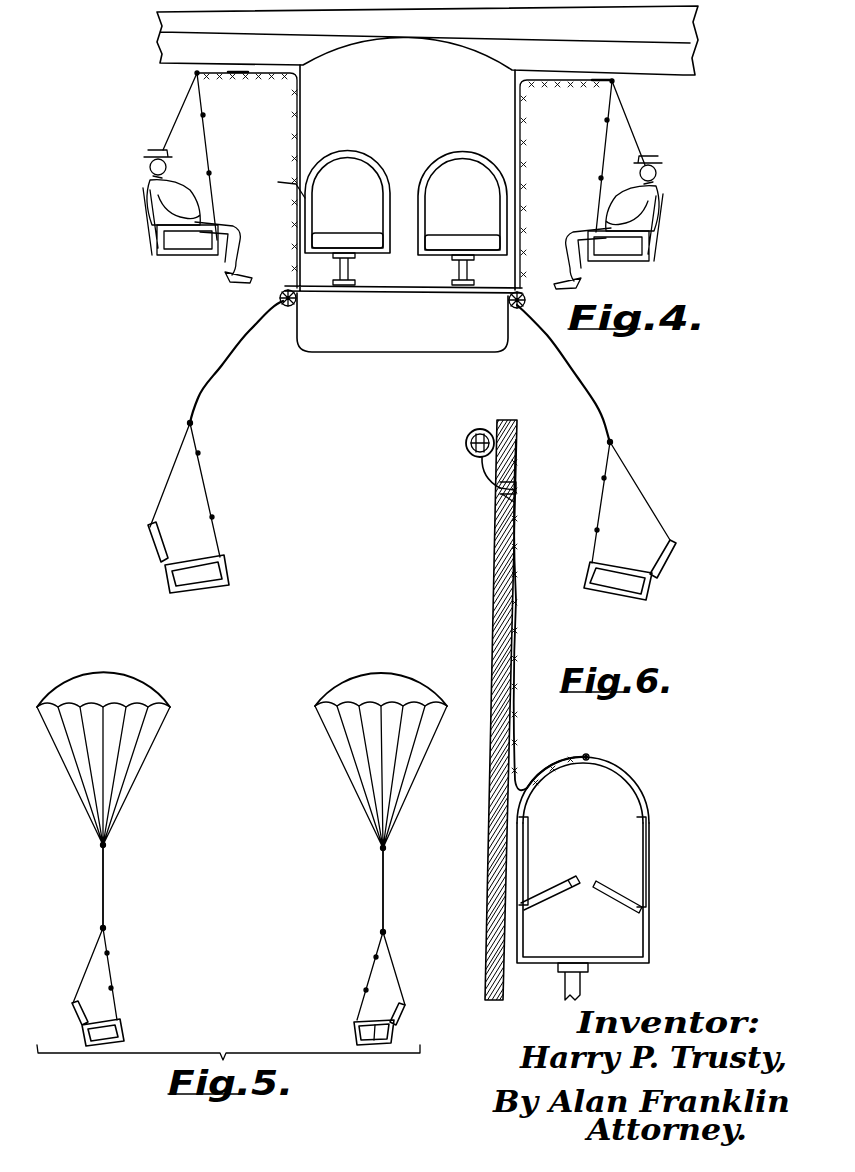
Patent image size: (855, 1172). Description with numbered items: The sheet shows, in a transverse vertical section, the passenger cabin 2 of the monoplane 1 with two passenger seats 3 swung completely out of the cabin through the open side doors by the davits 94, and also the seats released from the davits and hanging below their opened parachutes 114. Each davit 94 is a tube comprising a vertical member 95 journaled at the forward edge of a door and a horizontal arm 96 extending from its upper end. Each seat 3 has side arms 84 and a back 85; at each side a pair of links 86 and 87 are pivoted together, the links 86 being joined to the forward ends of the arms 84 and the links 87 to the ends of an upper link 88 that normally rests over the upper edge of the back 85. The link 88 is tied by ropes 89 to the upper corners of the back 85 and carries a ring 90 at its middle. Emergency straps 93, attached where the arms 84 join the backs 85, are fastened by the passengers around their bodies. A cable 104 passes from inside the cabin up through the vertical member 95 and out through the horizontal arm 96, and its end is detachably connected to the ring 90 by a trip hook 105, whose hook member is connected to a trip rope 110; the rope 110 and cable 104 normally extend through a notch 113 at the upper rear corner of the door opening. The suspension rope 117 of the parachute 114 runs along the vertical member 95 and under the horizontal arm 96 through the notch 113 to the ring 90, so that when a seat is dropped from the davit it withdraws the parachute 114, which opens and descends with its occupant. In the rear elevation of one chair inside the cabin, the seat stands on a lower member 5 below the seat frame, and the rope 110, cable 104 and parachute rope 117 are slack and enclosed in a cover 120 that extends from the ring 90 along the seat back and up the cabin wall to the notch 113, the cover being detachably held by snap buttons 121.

In FIG. 4, the passenger monoplane 1 is at (427, 178).
In FIG. 6, the passenger cabin 2 is at (493, 832).
In FIG. 4, the passenger seat 3 is at (403, 375).
In FIG. 6, the passenger seat 3 is at (573, 930).
In FIG. 5, the passenger seat 3 is at (238, 1022).
In FIG. 6, the seat support rod 5 is at (572, 985).
In FIG. 6, the side arm 84 is at (517, 927).
In FIG. 5, the side arm 84 is at (377, 1023).
In FIG. 5, the back 85 is at (403, 1015).
In FIG. 4, the link 86 is at (598, 207).
In FIG. 5, the link 86 is at (117, 1001).
In FIG. 4, the link 87 is at (605, 137).
In FIG. 6, the link 87 is at (513, 857).
In FIG. 5, the link 87 is at (110, 972).
In FIG. 4, the upper link 88 is at (612, 105).
In FIG. 6, the upper link 88 is at (632, 781).
In FIG. 5, the upper link 88 is at (107, 942).
In FIG. 4, the rope 89 is at (632, 133).
In FIG. 5, the rope 89 is at (86, 970).
In FIG. 4, the ring 90 is at (192, 423).
In FIG. 6, the ring 90 is at (589, 753).
In FIG. 5, the ring 90 is at (104, 928).
In FIG. 6, the emergency strap 93 is at (548, 883).
In FIG. 4, the davit 94 is at (404, 180).
In FIG. 4, the vertical member 95 is at (278, 183).
In FIG. 4, the horizontal arm 96 is at (236, 76).
In FIG. 6, the horizontal arm 96 is at (465, 445).
In FIG. 6, the cable 104 is at (485, 486).
In FIG. 6, the trip hook 105 is at (585, 754).
In FIG. 6, the rope 110 is at (520, 487).
In FIG. 6, the notch 113 is at (495, 500).
In FIG. 4, the parachute 114 is at (297, 303).
In FIG. 5, the parachute 114 is at (242, 761).
In FIG. 4, the suspension rope 117 is at (230, 355).
In FIG. 6, the suspension rope 117 is at (493, 493).
In FIG. 5, the suspension rope 117 is at (100, 877).
In FIG. 6, the cover 120 is at (517, 633).
In FIG. 6, the snap button 121 is at (518, 542).